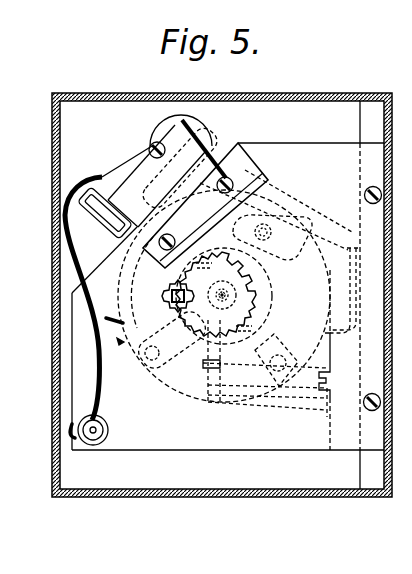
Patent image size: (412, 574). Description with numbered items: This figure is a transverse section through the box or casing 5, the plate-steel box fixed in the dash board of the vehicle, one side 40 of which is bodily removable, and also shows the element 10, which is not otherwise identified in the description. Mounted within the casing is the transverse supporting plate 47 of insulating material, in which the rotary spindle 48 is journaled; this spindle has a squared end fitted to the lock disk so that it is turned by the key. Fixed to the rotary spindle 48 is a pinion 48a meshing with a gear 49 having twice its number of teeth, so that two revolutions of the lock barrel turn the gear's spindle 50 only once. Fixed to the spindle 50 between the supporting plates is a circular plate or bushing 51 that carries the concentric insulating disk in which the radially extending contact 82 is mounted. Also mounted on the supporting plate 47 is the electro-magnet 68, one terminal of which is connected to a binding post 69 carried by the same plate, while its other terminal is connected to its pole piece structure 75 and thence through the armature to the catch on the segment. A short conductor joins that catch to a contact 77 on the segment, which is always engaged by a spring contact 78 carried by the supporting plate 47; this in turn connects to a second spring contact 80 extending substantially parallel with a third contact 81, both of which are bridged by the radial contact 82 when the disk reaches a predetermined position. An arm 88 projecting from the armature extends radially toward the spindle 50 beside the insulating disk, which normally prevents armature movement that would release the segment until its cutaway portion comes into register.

The box or casing 5 is at (228, 295).
The cord 10 is at (67, 440).
The side of casing 40 is at (54, 340).
The supporting plate 47 is at (193, 451).
The rotary spindle 48 is at (168, 302).
The pinion 48a is at (172, 340).
The gear 49 is at (247, 296).
The spindle 50 is at (220, 290).
The circular plate or bushing 51 is at (188, 400).
The electro-magnet 68 is at (119, 170).
The binding post 69 is at (106, 424).
The pole piece structure 75 is at (204, 162).
The contact 77 is at (265, 228).
The spring contact 78 is at (350, 250).
The second spring contact 80 is at (279, 412).
The third contact 81 is at (315, 390).
The radially extending contact 82 is at (268, 355).
The arm 88 is at (191, 206).